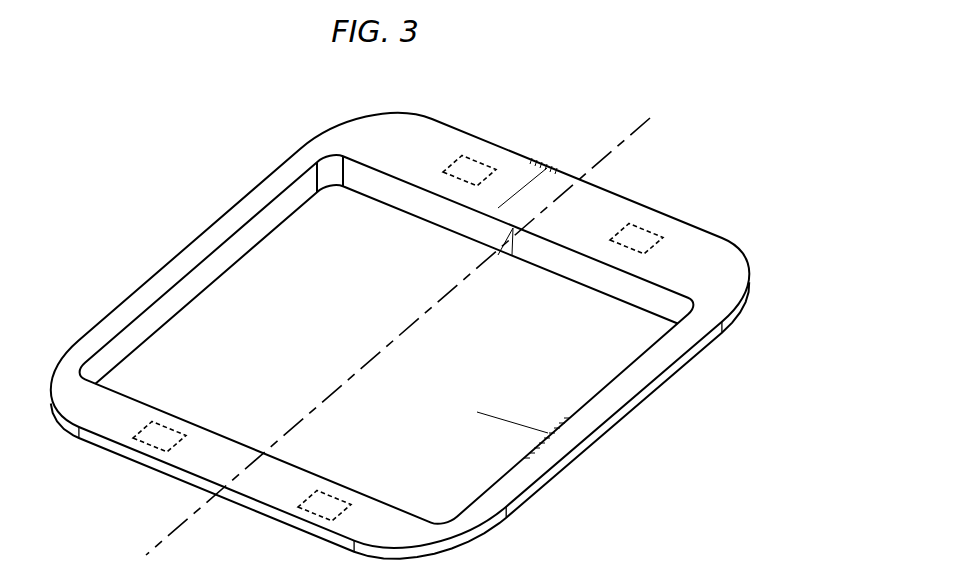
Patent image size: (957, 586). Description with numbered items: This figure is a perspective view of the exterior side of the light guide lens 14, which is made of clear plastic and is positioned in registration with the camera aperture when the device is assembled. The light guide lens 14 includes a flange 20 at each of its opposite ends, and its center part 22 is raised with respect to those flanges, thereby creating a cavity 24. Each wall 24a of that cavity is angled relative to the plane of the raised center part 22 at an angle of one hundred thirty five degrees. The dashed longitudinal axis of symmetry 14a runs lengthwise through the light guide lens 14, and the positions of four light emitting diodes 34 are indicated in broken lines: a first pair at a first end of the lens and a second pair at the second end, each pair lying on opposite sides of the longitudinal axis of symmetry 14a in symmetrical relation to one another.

The light guide lens 14 is at (612, 186).
The longitudinal axis of symmetry 14a is at (348, 380).
The flange 20 is at (705, 253).
The center part 22 is at (343, 335).
The cavity 24 is at (277, 263).
The wall 24a is at (450, 218).
The light emitting diodes 34 is at (471, 159).